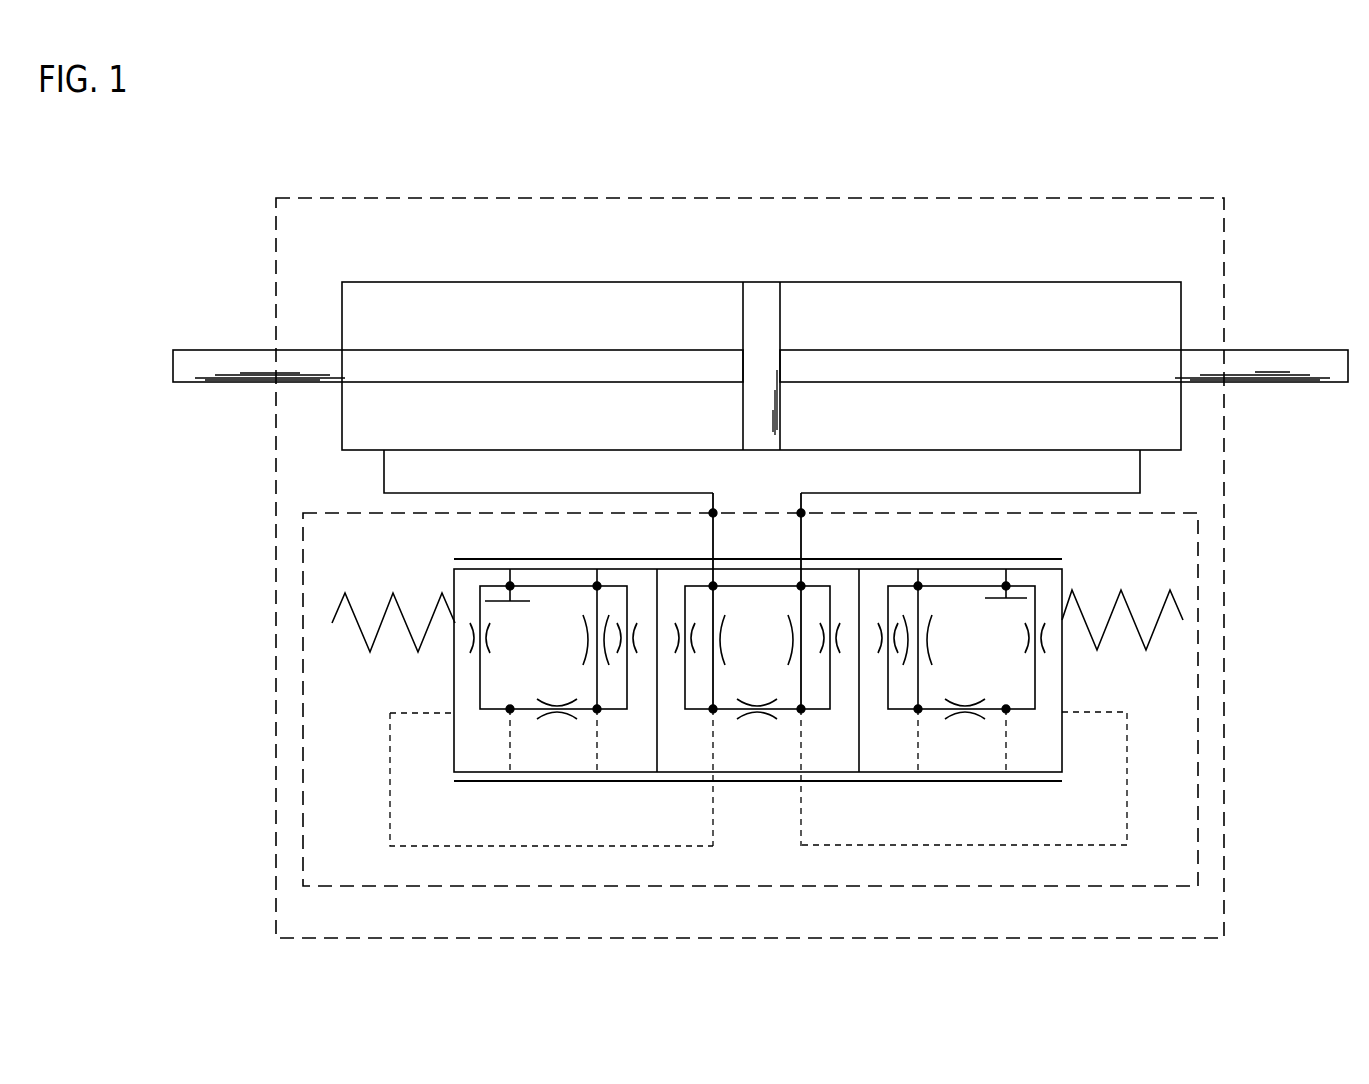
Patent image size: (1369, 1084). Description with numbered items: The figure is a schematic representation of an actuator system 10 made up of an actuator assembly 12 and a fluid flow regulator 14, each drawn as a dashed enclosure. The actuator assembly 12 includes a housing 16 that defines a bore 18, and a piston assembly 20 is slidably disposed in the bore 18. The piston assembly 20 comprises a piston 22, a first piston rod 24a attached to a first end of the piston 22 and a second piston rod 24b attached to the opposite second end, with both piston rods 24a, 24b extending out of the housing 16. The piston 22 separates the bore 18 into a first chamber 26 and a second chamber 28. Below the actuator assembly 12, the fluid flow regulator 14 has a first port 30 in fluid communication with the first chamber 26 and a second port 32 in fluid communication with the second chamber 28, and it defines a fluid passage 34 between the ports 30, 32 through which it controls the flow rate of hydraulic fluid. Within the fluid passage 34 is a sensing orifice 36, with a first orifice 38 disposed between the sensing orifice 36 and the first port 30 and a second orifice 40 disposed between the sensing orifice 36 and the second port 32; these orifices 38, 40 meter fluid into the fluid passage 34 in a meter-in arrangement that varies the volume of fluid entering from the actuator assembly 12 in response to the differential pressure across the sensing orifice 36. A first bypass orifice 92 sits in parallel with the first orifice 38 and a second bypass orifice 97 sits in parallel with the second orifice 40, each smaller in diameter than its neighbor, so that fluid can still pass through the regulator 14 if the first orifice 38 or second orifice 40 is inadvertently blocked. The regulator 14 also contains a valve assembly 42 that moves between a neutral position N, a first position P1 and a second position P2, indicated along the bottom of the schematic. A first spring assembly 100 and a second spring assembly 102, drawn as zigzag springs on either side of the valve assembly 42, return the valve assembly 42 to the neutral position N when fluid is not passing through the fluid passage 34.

The actuator system 10 is at (355, 185).
The actuator assembly 12 is at (415, 262).
The fluid flow regulator 14 is at (297, 577).
The housing 16 is at (945, 197).
The bore 18 is at (972, 282).
The piston assembly 20 is at (853, 312).
The piston 22 is at (762, 292).
The first piston rod 24a is at (1020, 357).
The second piston rod 24b is at (558, 364).
The first chamber 26 is at (480, 331).
The second chamber 28 is at (980, 440).
The first port 30 is at (716, 508).
The second port 32 is at (800, 512).
The fluid passage 34 is at (697, 708).
The sensing orifice 36 is at (768, 718).
The first orifice 38 is at (724, 636).
The second orifice 40 is at (792, 645).
The valve assembly 42 is at (1078, 688).
The first bypass orifice 92 is at (678, 632).
The second bypass orifice 97 is at (832, 648).
The first spring assembly 100 is at (418, 585).
The second spring assembly 102 is at (1108, 585).
The first position P1 is at (522, 776).
The second position P2 is at (1028, 776).
The neutral position N is at (823, 776).